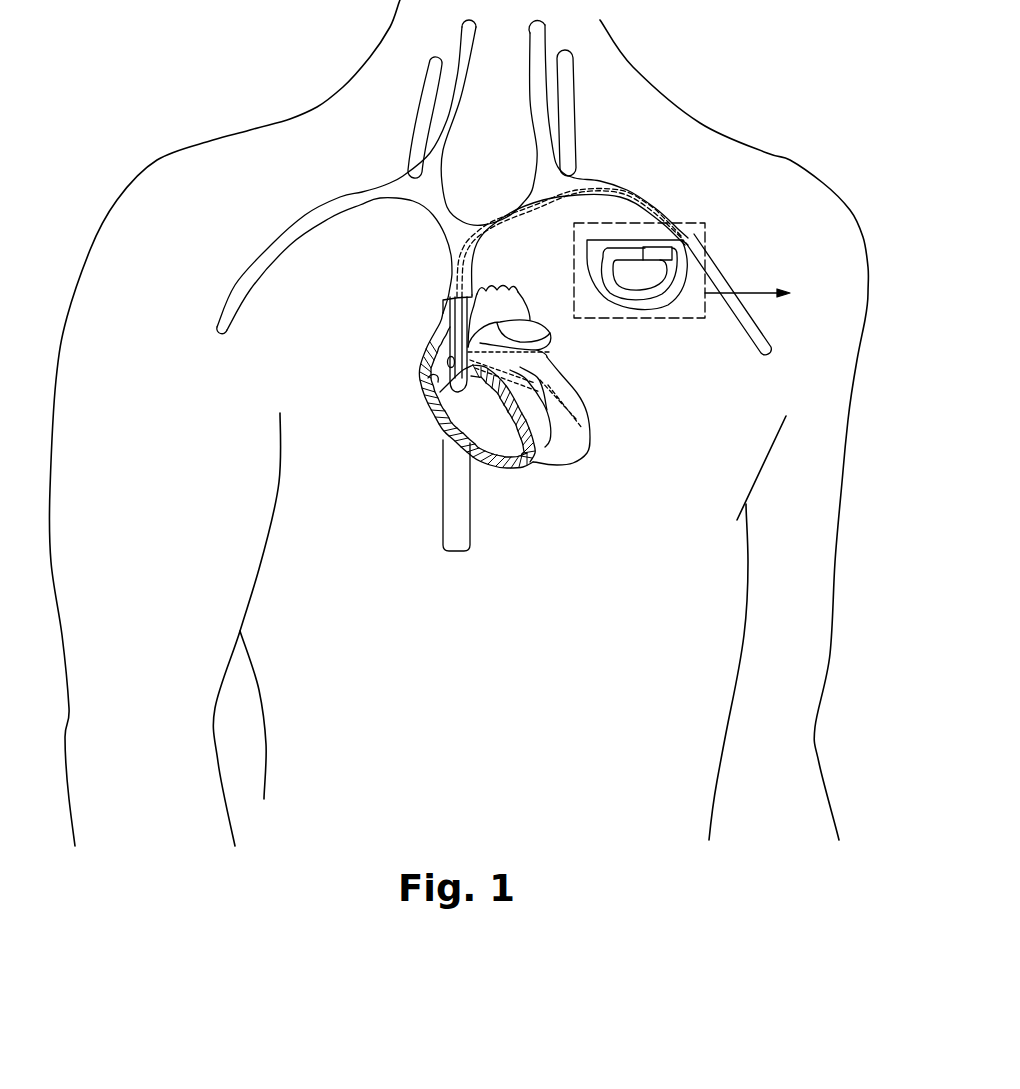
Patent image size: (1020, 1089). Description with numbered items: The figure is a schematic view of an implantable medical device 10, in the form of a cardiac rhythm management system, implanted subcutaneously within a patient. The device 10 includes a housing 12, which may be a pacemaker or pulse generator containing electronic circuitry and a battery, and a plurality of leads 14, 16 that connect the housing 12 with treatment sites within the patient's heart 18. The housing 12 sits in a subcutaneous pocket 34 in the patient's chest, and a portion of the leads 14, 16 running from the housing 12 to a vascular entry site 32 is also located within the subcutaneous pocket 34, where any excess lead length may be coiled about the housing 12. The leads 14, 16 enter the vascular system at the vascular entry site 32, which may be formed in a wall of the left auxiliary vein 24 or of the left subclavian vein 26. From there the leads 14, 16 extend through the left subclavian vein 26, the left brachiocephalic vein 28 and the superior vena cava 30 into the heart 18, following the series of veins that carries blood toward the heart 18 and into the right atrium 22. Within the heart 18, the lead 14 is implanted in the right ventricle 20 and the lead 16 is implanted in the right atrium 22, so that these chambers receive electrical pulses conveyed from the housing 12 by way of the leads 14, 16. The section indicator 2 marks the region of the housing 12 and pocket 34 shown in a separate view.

The section line for FIG. 2 is at (756, 298).
The implantable medical device 10 is at (632, 215).
The housing 12 is at (625, 279).
The lead 14 is at (500, 478).
The lead 16 is at (432, 337).
The heart 18 is at (506, 419).
The right ventricle 20 is at (527, 478).
The right atrium 22 is at (428, 379).
The left auxiliary vein 24 is at (718, 258).
The left subclavian vein 26 is at (633, 190).
The left brachiocephalic vein 28 is at (533, 193).
The superior vena cava 30 is at (450, 274).
The vascular entry site 32 is at (687, 237).
The subcutaneous pocket 34 is at (588, 261).